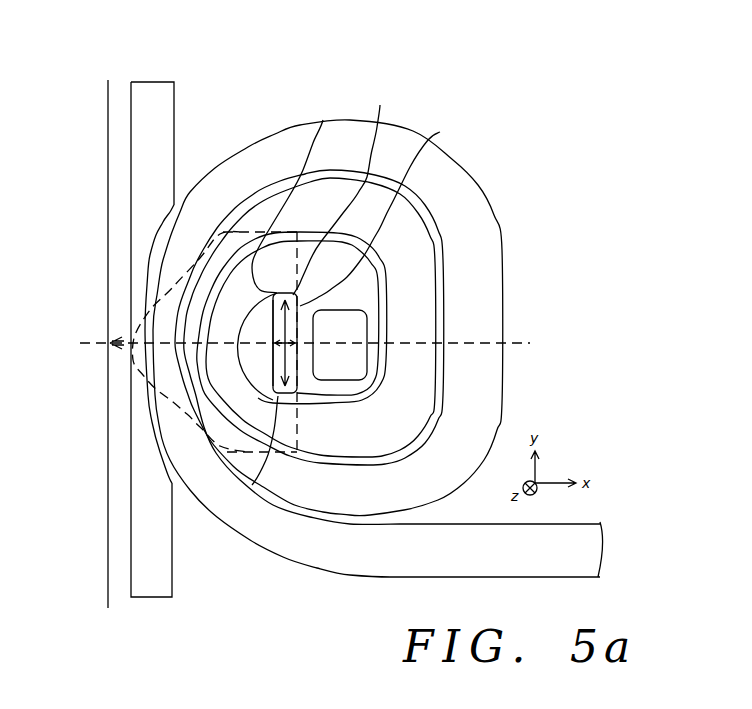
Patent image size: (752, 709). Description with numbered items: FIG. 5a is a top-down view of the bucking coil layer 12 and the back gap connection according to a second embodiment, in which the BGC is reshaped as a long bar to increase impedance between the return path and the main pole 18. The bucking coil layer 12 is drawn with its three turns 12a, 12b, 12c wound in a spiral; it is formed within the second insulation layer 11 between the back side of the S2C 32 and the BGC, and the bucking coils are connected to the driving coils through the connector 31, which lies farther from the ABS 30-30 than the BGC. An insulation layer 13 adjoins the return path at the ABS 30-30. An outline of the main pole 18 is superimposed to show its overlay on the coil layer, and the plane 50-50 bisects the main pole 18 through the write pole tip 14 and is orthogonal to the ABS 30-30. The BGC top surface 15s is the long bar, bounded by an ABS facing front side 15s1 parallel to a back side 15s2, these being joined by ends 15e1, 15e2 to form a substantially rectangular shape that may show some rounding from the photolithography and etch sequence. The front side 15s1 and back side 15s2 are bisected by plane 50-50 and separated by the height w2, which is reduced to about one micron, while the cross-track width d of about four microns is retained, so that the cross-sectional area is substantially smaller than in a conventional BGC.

The air bearing surface (ABS) 30 is at (108, 608).
The second insulation layer 11 is at (181, 195).
The bucking coil layer 12 is at (418, 123).
The first turn of the bucking coil layer 12a is at (180, 363).
The second turn of the bucking coil layer 12b is at (197, 398).
The third turn of the bucking coil layer 12c is at (222, 397).
The insulation layer 13 is at (125, 557).
The write pole tip 14 is at (108, 343).
The BGC top surface 15s is at (323, 120).
The ABS facing side of the BGC 15s1 is at (273, 319).
The back side of the BGC 15s2 is at (440, 132).
The first end of the BGC 15e1 is at (252, 485).
The second end of the BGC 15e2 is at (348, 190).
The main pole 18 is at (142, 388).
The connector 31 is at (340, 372).
The S2C 32 is at (157, 588).
The plane 50- 50 is at (305, 347).
The height of the long bar BGC w2 is at (276, 346).
The cross-track width of the BGC d is at (282, 373).